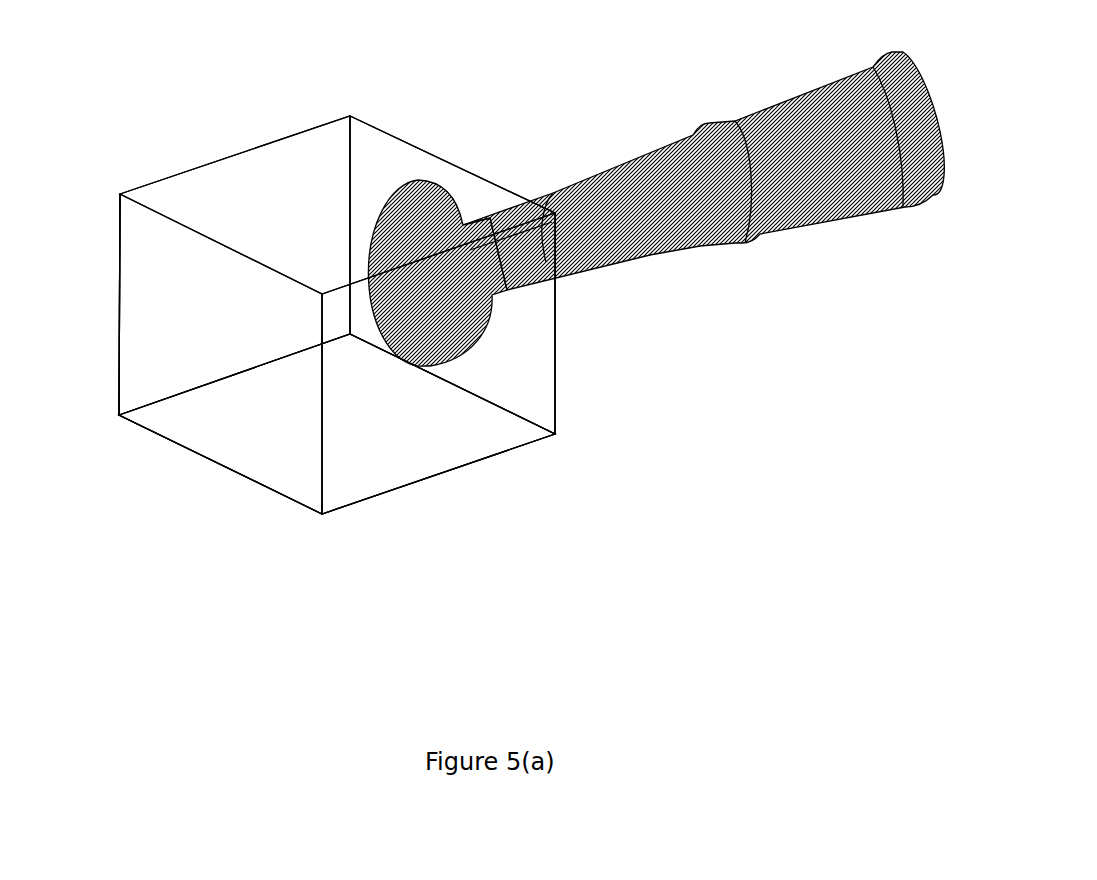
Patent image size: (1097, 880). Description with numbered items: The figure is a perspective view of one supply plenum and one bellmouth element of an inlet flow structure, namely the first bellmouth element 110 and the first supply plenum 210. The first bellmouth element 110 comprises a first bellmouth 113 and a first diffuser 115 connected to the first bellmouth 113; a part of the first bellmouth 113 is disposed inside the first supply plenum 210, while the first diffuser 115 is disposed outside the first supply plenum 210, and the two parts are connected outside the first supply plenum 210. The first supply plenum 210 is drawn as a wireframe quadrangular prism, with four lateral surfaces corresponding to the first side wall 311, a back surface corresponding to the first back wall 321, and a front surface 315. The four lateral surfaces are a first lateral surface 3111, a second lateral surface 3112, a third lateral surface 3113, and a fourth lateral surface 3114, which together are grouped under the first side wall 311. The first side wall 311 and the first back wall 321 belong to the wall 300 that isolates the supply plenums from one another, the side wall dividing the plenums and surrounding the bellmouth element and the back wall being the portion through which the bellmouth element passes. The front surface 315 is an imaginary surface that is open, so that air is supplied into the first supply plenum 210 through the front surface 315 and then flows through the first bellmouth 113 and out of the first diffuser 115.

The first bellmouth element 110 is at (656, 188).
The first bellmouth 113 is at (460, 215).
The first diffuser 115 is at (482, 78).
The first supply plenum 210 is at (208, 141).
The wall 300 is at (337, 404).
The first side wall 311 is at (337, 376).
The first lateral surface 3111 is at (181, 341).
The second lateral surface 3112 is at (281, 457).
The third lateral surface 3113 is at (363, 450).
The fourth lateral surface 3114 is at (334, 260).
The front surface 315 is at (130, 277).
The first back wall 321 is at (527, 358).